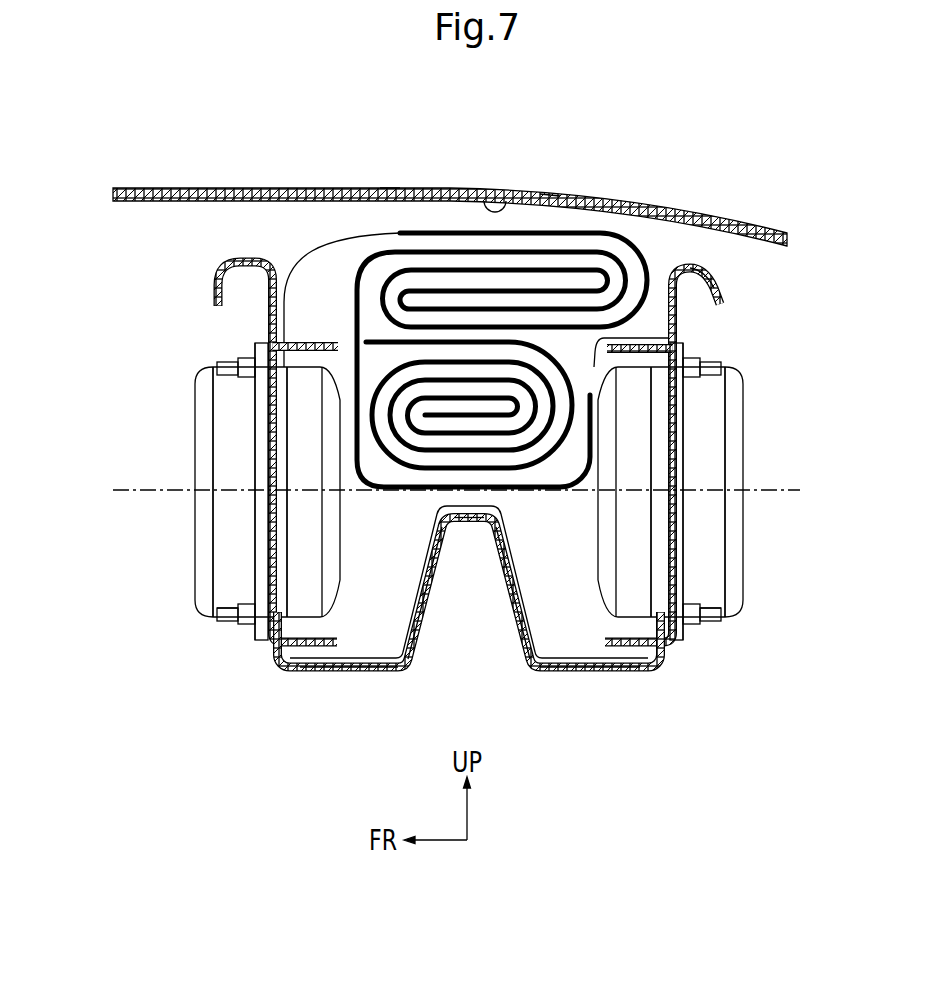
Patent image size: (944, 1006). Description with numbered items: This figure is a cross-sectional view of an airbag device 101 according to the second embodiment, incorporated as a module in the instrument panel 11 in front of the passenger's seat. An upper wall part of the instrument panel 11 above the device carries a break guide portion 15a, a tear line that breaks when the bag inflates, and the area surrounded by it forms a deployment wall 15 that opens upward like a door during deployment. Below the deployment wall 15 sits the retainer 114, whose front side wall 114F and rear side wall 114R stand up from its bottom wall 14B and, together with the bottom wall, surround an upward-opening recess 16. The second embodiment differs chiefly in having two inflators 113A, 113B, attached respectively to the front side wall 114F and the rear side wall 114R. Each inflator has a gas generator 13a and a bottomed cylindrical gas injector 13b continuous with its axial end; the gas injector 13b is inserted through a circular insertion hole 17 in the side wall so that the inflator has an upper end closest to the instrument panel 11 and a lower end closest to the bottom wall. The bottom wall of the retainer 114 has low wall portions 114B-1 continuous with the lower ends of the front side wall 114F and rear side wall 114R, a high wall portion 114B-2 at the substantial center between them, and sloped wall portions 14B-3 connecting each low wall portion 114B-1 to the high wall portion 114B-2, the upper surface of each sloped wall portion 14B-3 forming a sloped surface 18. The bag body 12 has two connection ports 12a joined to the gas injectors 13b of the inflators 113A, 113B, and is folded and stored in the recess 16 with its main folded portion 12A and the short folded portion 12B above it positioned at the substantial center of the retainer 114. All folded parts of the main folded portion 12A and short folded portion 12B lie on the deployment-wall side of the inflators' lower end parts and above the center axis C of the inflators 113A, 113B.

The instrument panel 11 is at (750, 218).
The airbag device 101 is at (633, 242).
The deployment wall 15 is at (393, 188).
The break guide portion 15a is at (512, 197).
The bag body 12 is at (318, 257).
The main folded portion 12A is at (474, 340).
The short folded portion 12B is at (585, 233).
The connection port 12a is at (253, 407).
The gas generator 13a is at (220, 580).
The gas injector 13b is at (303, 550).
The inflator 113A is at (193, 558).
The inflator 113B is at (748, 580).
The retainer 114 is at (724, 297).
The front side wall 114F is at (266, 297).
The rear side wall 114R is at (678, 310).
The recess 16 is at (680, 336).
The insertion hole 17 is at (250, 635).
The sloped surface 18 is at (403, 585).
The bottom wall 14B is at (496, 694).
The low wall portion 114B-1 is at (335, 678).
The high wall portion 114B-2 is at (465, 525).
The sloped wall portion 14B-3 is at (428, 585).
The center axis C is at (122, 490).